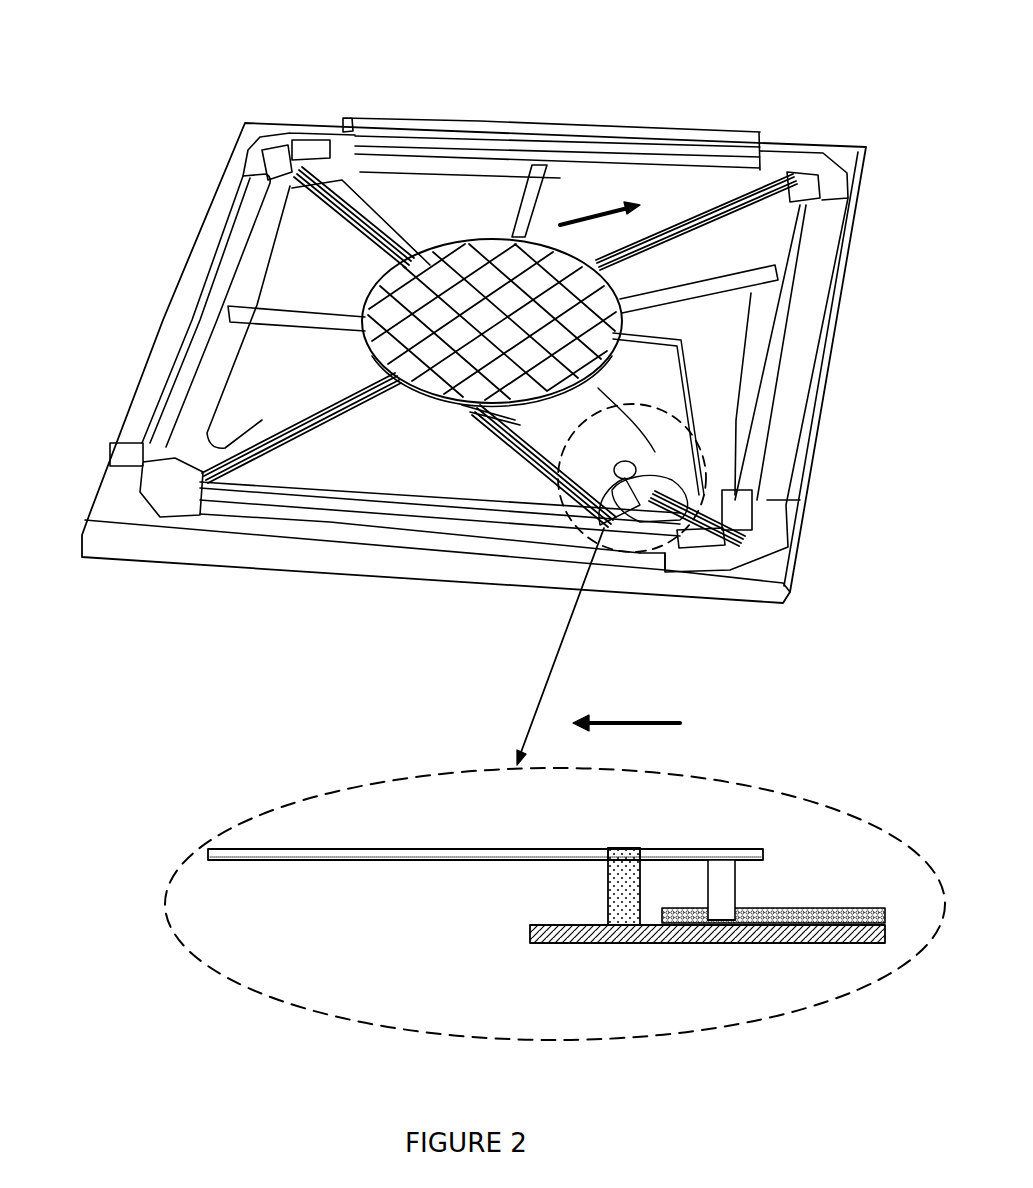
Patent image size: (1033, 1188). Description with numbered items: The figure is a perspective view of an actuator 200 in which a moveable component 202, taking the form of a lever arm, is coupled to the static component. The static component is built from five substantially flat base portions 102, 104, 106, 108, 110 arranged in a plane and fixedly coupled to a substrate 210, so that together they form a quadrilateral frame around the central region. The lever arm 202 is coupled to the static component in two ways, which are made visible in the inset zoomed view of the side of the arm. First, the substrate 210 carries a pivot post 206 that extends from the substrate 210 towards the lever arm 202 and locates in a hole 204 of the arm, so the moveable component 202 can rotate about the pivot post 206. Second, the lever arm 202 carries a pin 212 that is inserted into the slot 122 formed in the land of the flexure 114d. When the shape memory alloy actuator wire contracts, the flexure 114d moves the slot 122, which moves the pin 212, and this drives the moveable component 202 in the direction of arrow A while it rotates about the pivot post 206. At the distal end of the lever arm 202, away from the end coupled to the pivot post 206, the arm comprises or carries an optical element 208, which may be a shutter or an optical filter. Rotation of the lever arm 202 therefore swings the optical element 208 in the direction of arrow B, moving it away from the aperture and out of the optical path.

The MEMS device 200 is at (132, 265).
The base portion 102 is at (717, 382).
The base portion 104 is at (683, 202).
The base portion 106 is at (381, 193).
The base portion 108 is at (243, 402).
The base portion 110 is at (338, 465).
The flexure 114d is at (862, 907).
The slot 122 is at (718, 920).
The moveable component 202 is at (525, 458).
The hole 204 is at (578, 527).
The pivot post 206 is at (640, 515).
The optical element 208 is at (490, 262).
The substrate 210 is at (805, 411).
The pin 212 is at (732, 892).